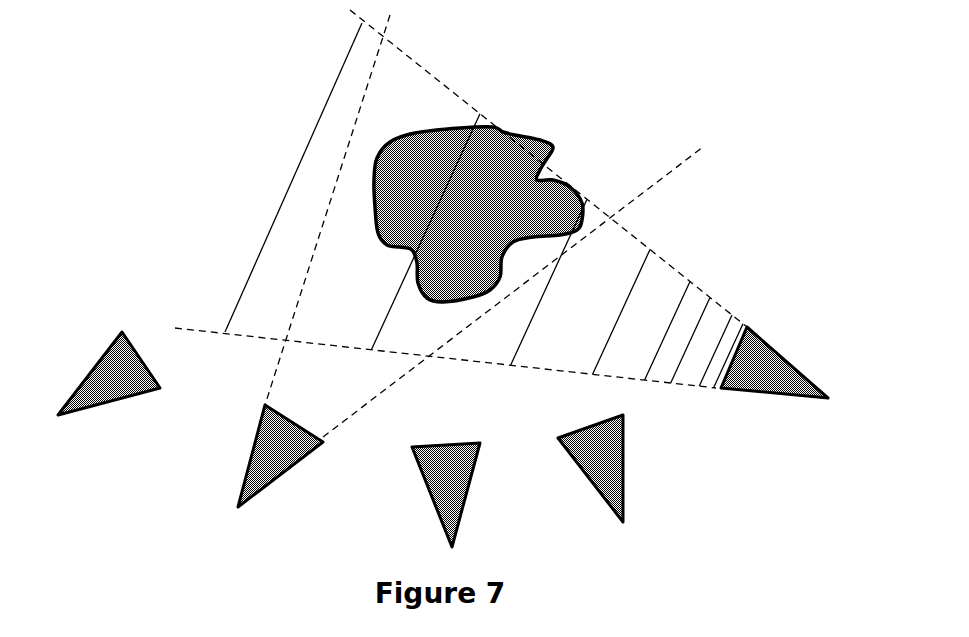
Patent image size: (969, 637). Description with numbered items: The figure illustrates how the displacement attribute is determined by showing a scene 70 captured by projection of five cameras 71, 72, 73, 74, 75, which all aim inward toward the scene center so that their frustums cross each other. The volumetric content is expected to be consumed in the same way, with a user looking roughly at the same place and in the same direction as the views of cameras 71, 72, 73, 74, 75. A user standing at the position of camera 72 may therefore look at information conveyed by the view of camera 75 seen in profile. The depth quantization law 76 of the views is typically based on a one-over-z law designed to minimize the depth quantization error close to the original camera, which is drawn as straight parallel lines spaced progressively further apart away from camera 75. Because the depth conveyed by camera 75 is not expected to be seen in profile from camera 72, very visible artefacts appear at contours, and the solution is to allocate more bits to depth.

The scene 70 is at (557, 144).
The camera 71 is at (101, 370).
The camera 72 is at (258, 456).
The camera 73 is at (431, 495).
The camera 74 is at (586, 470).
The camera 75 is at (774, 385).
The depth quantization law 76 is at (722, 289).